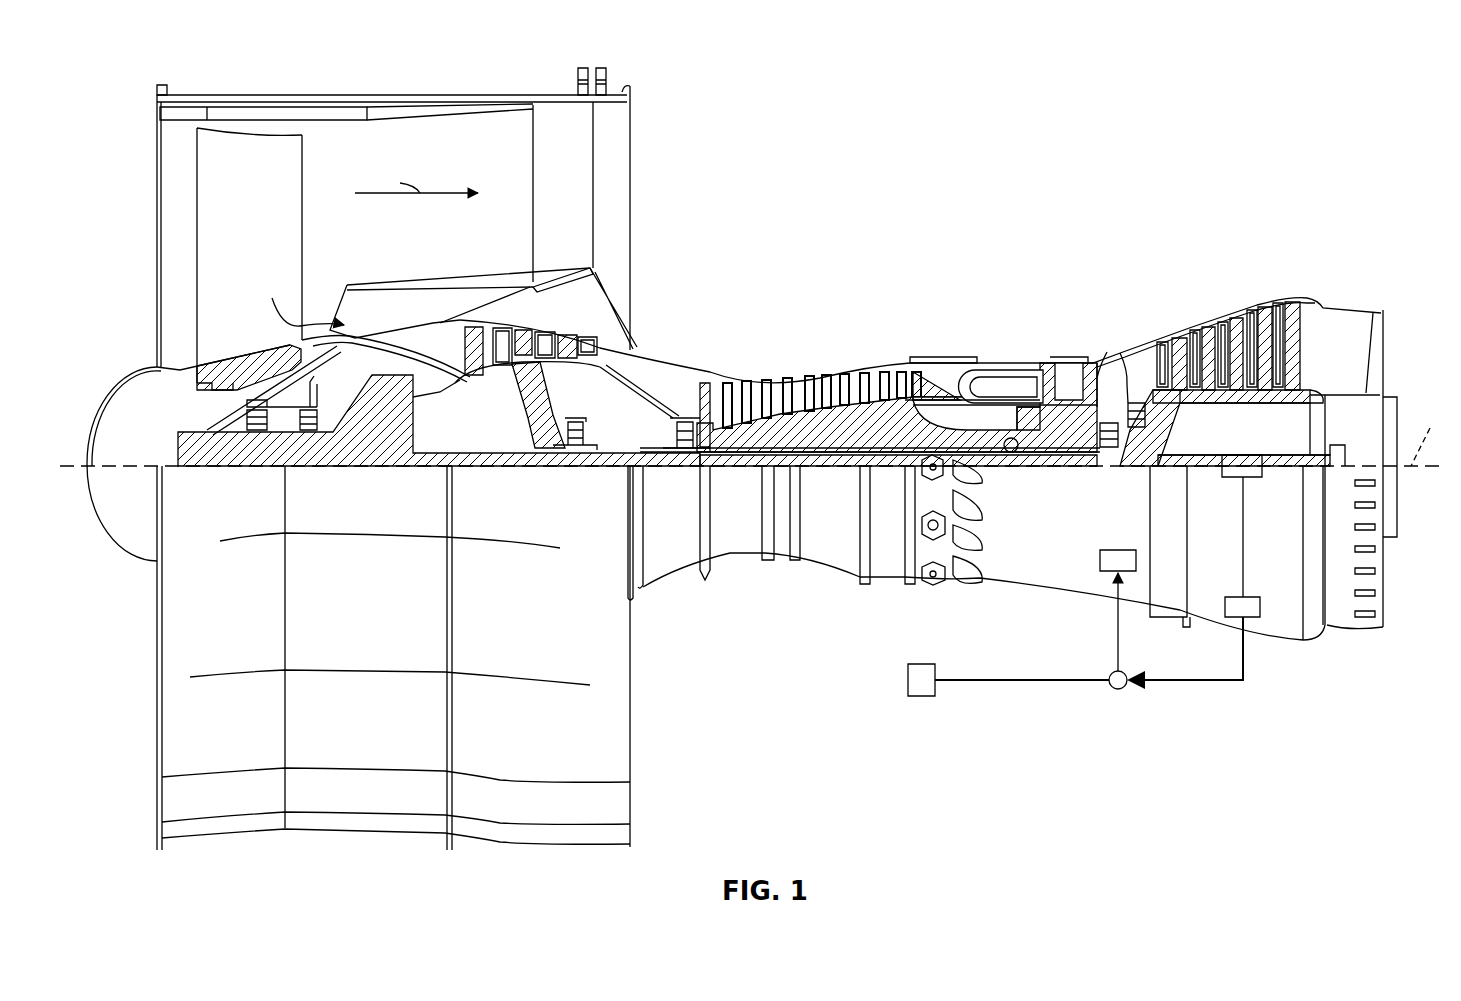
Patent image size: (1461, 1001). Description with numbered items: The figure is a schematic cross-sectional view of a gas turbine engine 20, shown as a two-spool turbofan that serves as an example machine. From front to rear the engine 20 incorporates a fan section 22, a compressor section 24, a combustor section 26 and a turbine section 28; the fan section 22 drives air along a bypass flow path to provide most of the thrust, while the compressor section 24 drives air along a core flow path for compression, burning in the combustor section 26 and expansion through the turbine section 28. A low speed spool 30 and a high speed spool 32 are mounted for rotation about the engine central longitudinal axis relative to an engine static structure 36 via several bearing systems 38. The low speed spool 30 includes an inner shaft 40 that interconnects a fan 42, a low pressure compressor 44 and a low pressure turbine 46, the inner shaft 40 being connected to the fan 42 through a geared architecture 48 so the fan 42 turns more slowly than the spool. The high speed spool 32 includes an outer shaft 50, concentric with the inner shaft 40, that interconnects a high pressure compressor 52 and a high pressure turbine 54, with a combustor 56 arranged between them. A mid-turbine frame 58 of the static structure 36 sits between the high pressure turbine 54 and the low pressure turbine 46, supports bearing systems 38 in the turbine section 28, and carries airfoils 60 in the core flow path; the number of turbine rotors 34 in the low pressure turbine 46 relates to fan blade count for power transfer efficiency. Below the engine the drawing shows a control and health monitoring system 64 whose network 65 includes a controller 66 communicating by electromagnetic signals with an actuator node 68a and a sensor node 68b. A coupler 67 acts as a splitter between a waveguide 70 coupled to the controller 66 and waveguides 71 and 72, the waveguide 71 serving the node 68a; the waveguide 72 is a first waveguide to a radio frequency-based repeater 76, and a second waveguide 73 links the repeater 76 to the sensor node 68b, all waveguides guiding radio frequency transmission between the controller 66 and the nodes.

The gas turbine engine 20 is at (1206, 130).
The fan section 22 is at (422, 80).
The compressor section 24 is at (823, 322).
The combustor section 26 is at (990, 322).
The turbine section 28 is at (1112, 272).
The low speed spool 30 is at (850, 472).
The high speed spool 32 is at (905, 413).
The turbine rotors 34 is at (1310, 405).
The engine static structure 36 is at (893, 580).
The bearing systems 38 is at (255, 432).
The inner shaft 40 is at (646, 468).
The fan 42 is at (271, 219).
The low pressure compressor 44 is at (546, 343).
The low pressure turbine 46 is at (1236, 318).
The geared architecture 48 is at (397, 432).
The outer shaft 50 is at (1018, 450).
The high pressure compressor 52 is at (810, 432).
The high pressure turbine 54 is at (1070, 362).
The combustor 56 is at (994, 380).
The mid-turbine frame 58 is at (1121, 348).
The airfoils 60 is at (1118, 374).
The control and health monitoring system 64 is at (1184, 712).
The network 65 is at (1309, 725).
The controller 66 is at (907, 697).
The coupler 67 is at (1121, 690).
The actuator node 68a is at (1100, 560).
The sensor node 68b is at (1263, 477).
The waveguide 70 is at (985, 682).
The waveguide 71 is at (1114, 650).
The first waveguide 72 is at (1250, 682).
The second waveguide 73 is at (1243, 550).
The radio frequency-based repeater 76 is at (1259, 617).